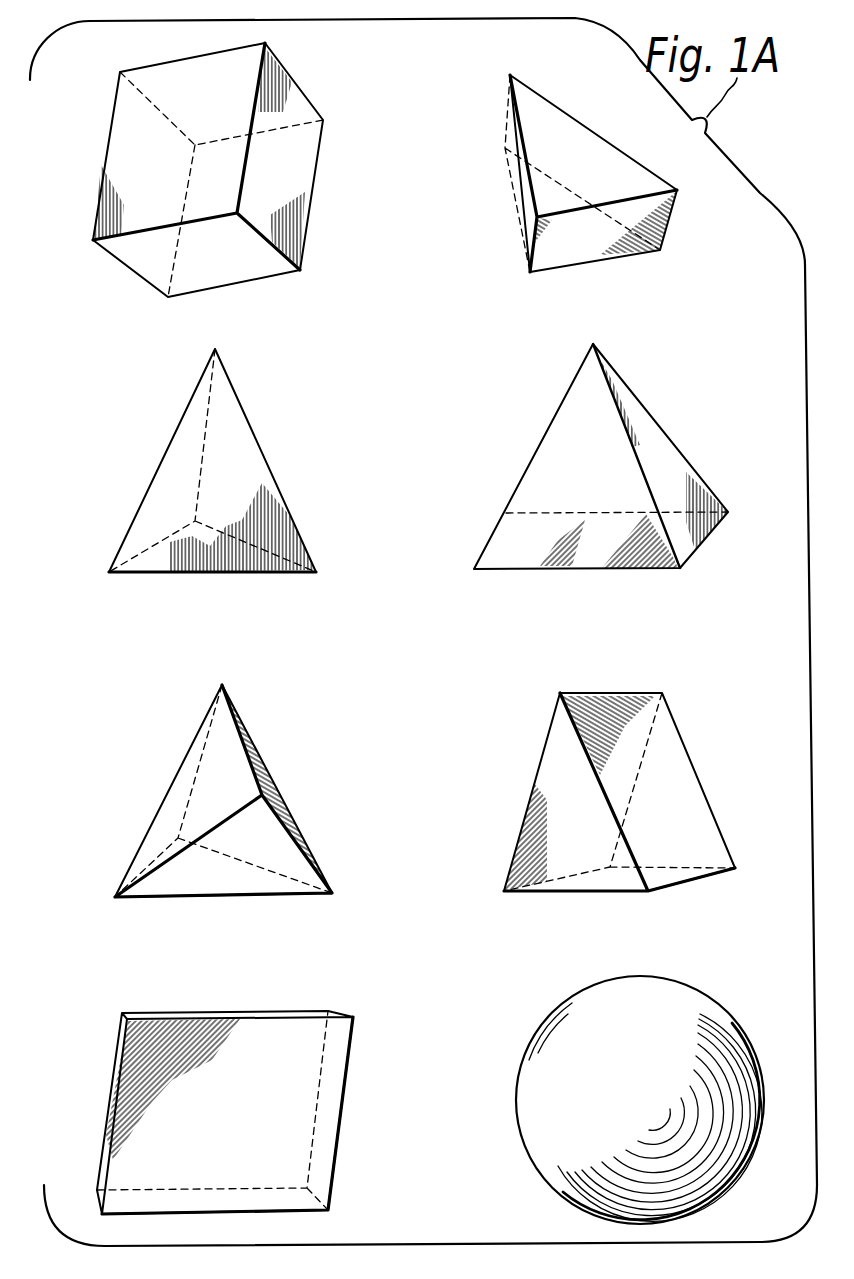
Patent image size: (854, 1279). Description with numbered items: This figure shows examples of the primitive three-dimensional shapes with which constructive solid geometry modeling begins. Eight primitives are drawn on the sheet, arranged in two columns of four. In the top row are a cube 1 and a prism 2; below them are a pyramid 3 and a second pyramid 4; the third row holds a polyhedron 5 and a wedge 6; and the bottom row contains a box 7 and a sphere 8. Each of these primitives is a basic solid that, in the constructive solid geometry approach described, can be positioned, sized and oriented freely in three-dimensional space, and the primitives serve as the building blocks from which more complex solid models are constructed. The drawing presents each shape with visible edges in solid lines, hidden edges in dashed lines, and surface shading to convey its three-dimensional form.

The cube 1 is at (118, 120).
The prism 2 is at (511, 117).
The pyramid 3 is at (172, 445).
The pyramid 4 is at (645, 421).
The polyhedron 5 is at (168, 797).
The wedge 6 is at (689, 772).
The box 7 is at (112, 1088).
The sphere 8 is at (760, 1065).